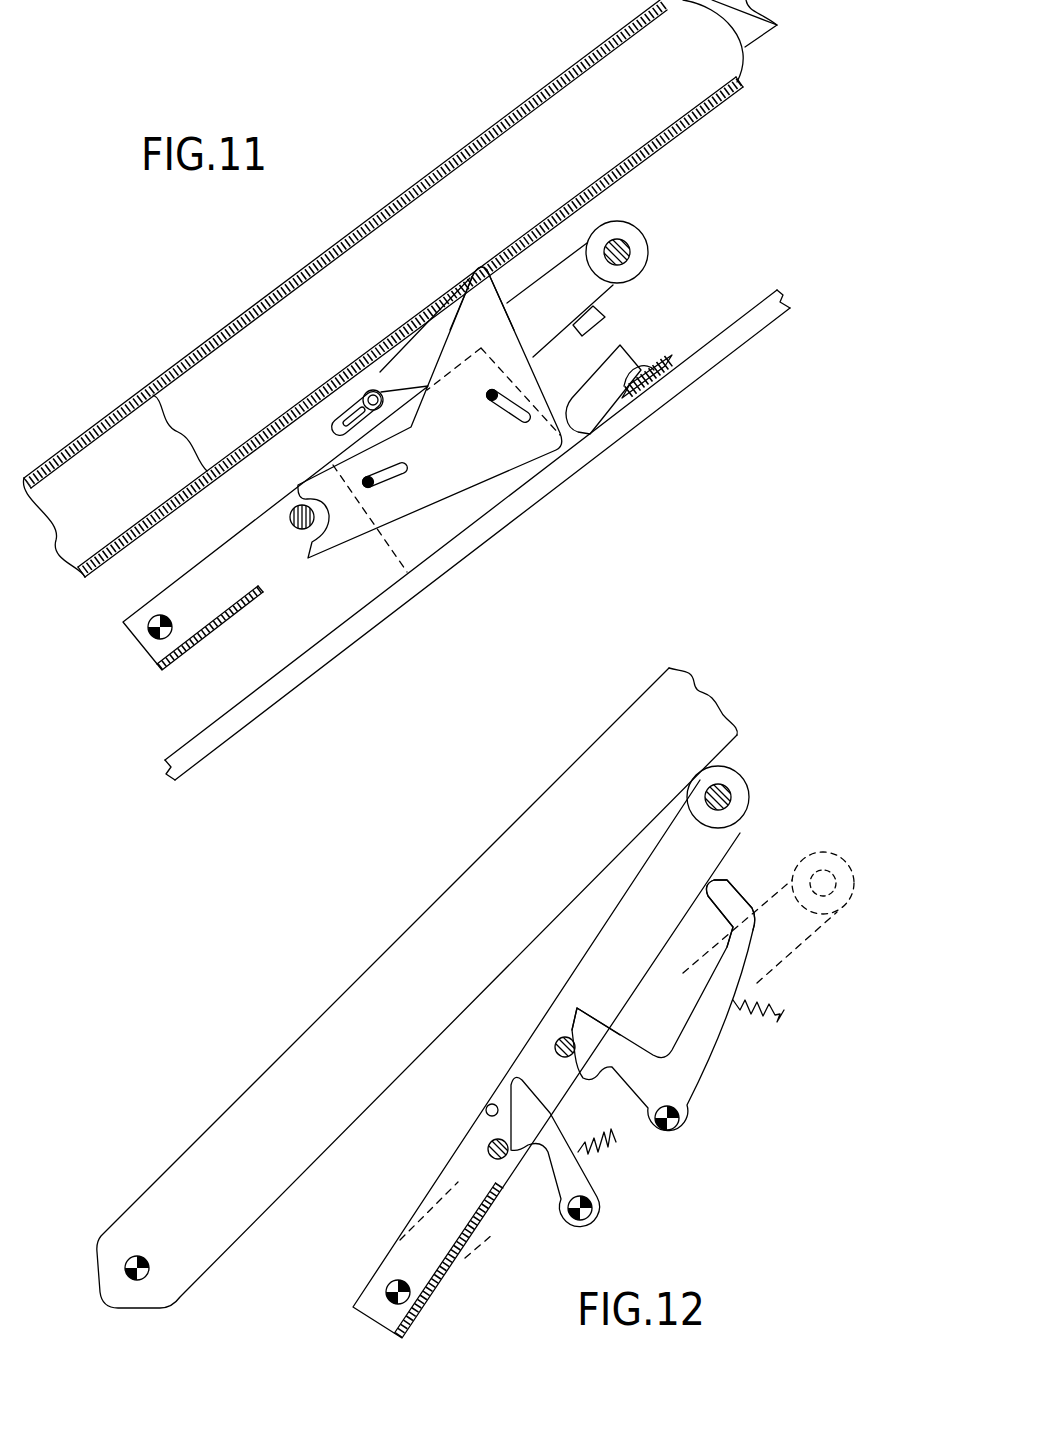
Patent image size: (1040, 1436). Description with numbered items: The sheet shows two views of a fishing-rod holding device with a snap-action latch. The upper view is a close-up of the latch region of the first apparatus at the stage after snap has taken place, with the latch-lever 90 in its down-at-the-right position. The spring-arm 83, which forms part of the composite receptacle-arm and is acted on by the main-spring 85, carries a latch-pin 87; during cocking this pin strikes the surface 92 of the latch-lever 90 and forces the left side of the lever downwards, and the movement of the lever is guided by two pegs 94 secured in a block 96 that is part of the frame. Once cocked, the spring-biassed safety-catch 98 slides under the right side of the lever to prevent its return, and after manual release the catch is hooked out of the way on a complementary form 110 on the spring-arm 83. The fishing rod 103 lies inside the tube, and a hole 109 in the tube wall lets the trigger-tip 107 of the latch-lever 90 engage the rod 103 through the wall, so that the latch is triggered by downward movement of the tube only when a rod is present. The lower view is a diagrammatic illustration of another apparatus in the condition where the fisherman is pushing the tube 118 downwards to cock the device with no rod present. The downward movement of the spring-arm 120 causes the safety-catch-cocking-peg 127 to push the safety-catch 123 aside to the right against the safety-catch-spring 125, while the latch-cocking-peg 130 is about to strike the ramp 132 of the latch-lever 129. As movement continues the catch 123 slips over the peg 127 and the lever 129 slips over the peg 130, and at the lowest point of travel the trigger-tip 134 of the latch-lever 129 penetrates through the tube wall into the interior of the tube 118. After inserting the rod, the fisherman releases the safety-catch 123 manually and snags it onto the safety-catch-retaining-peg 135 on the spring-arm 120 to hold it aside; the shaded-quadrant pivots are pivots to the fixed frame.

In FIG. 11, the fishing rod 103 is at (737, 62).
In FIG. 11, the hole 109 is at (411, 333).
In FIG. 11, the spring-arm 83 is at (650, 251).
In FIG. 11, the complementary form 110 is at (606, 316).
In FIG. 11, the safety-catch 98 is at (612, 412).
In FIG. 11, the block 96 is at (433, 547).
In FIG. 11, the surface 92 is at (293, 549).
In FIG. 11, the latch-lever 90 is at (437, 406).
In FIG. 11, the trigger-tip 107 is at (481, 289).
In FIG. 11, the pegs 94 is at (492, 403).
In FIG. 11, the main-spring 85 is at (336, 430).
In FIG. 11, the latch-pin 87 is at (291, 523).
In FIG. 12, the tube 118 is at (393, 948).
In FIG. 12, the spring-arm 120 is at (720, 836).
In FIG. 12, the latch-lever 129 is at (668, 983).
In FIG. 12, the trigger-tip 134 is at (720, 882).
In FIG. 12, the ramp 132 is at (578, 1016).
In FIG. 12, the latch-cocking-peg 130 is at (555, 1047).
In FIG. 12, the safety-catch-retaining-peg 135 is at (486, 1110).
In FIG. 12, the safety-catch-cocking-peg 127 is at (488, 1150).
In FIG. 12, the safety-catch 123 is at (548, 1130).
In FIG. 12, the safety-catch-spring 125 is at (594, 1153).